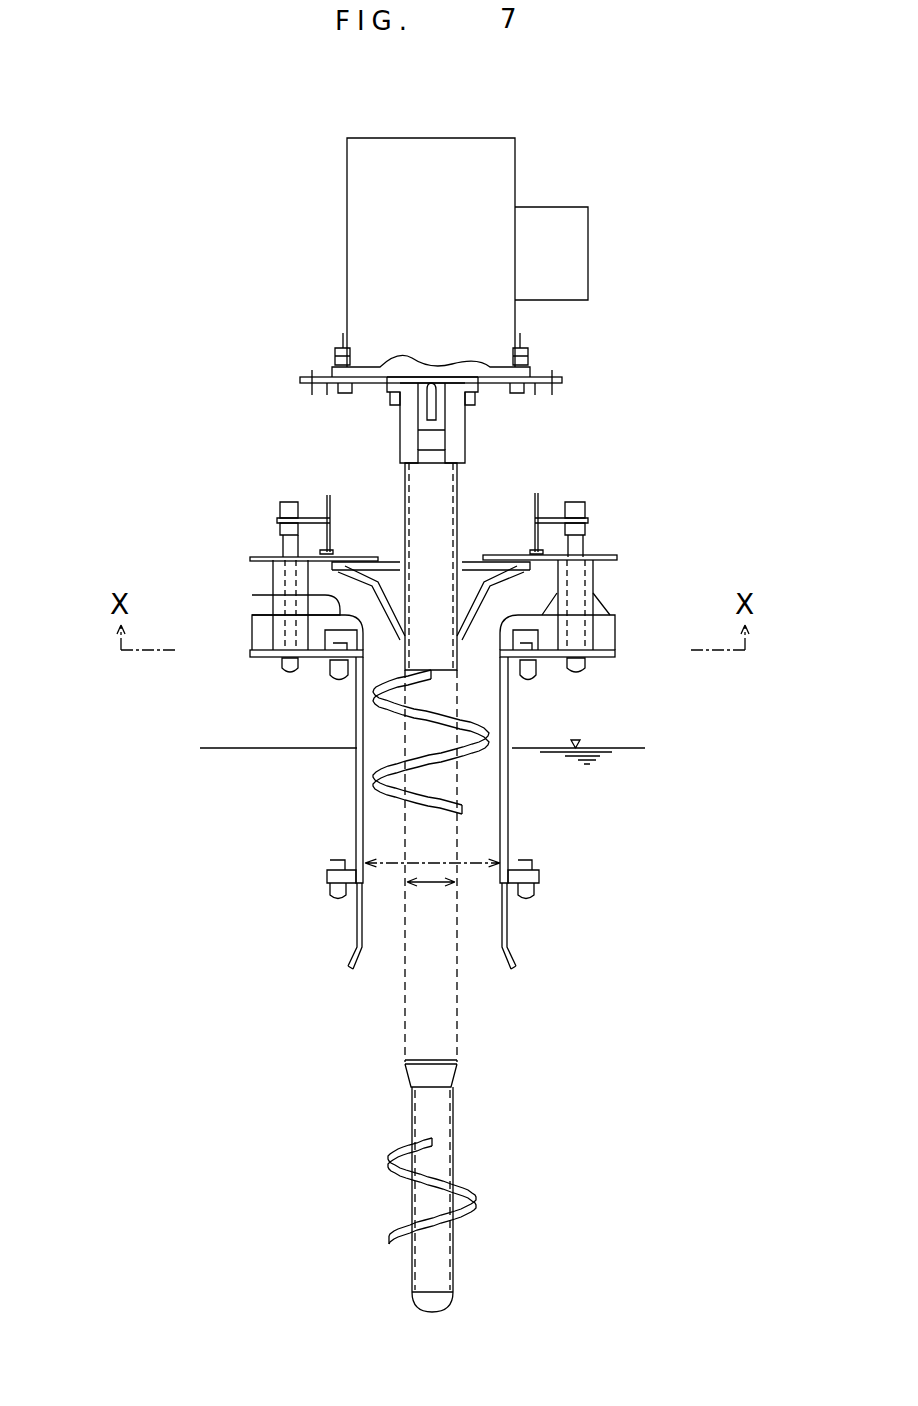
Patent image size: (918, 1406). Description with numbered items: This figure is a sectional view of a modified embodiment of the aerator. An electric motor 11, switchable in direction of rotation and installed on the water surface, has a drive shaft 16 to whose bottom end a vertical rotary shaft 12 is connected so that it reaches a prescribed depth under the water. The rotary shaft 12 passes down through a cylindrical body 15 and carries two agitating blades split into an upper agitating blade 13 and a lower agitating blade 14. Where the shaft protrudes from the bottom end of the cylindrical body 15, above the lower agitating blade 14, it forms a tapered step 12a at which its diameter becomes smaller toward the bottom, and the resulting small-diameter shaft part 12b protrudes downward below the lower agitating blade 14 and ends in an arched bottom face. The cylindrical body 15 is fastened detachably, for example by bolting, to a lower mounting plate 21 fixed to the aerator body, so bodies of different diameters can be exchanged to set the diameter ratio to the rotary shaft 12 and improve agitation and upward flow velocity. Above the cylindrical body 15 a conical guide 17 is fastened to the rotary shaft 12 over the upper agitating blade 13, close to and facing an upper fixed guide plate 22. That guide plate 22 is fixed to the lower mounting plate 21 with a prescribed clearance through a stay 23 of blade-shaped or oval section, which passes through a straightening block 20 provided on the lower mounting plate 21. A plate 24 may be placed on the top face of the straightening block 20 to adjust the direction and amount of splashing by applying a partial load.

The electric motor 11 is at (468, 152).
The rotary shaft 12 is at (428, 1027).
The tapered step 12a is at (456, 1075).
The small-diameter shaft part 12b is at (424, 1110).
The upper agitating blade 13 is at (385, 770).
The lower agitating blade 14 is at (466, 1170).
The cylindrical body 15 is at (503, 810).
The drive shaft 16 is at (455, 482).
The conical guide 17 is at (385, 632).
The straightening block 20 is at (260, 640).
The lower mounting plate 21 is at (606, 655).
The upper fixed guide plate 22 is at (600, 556).
The stay 23 is at (280, 578).
The plate 24 is at (258, 605).